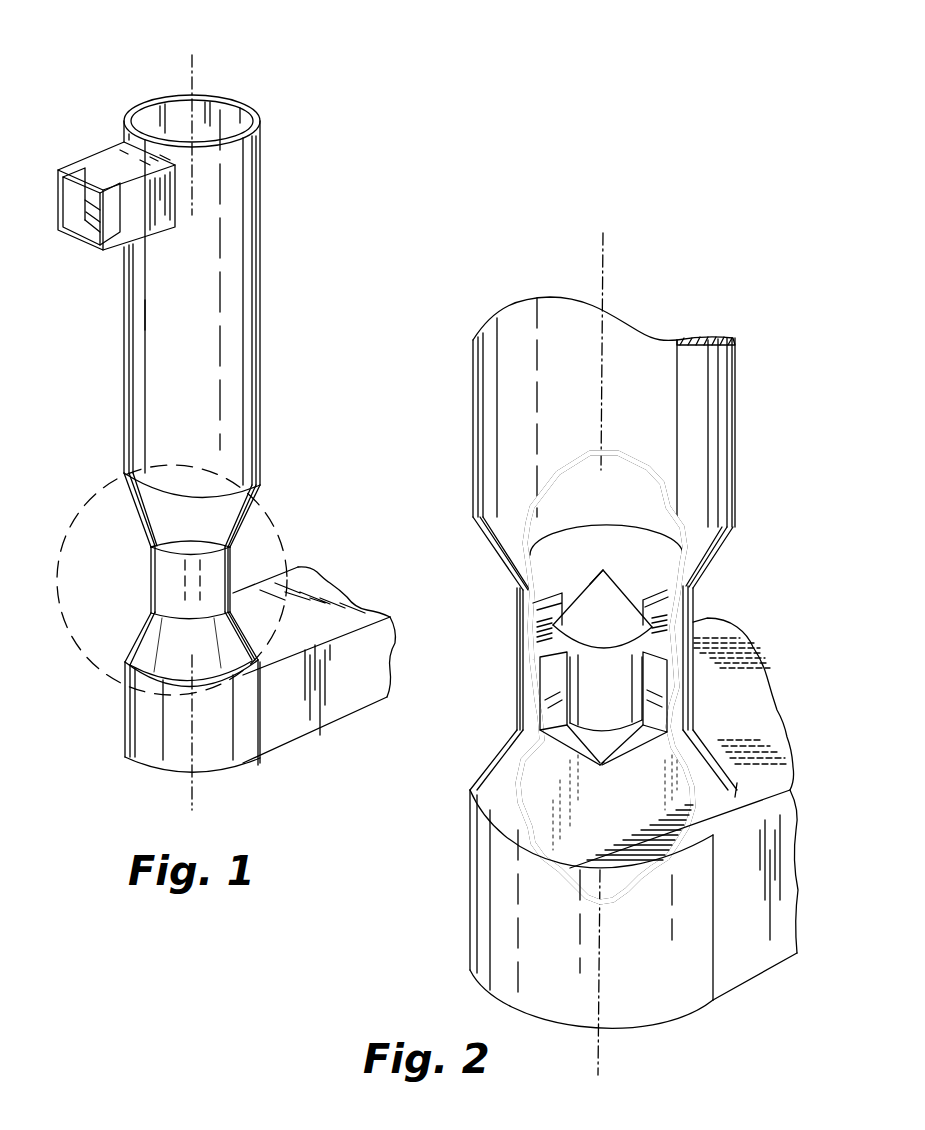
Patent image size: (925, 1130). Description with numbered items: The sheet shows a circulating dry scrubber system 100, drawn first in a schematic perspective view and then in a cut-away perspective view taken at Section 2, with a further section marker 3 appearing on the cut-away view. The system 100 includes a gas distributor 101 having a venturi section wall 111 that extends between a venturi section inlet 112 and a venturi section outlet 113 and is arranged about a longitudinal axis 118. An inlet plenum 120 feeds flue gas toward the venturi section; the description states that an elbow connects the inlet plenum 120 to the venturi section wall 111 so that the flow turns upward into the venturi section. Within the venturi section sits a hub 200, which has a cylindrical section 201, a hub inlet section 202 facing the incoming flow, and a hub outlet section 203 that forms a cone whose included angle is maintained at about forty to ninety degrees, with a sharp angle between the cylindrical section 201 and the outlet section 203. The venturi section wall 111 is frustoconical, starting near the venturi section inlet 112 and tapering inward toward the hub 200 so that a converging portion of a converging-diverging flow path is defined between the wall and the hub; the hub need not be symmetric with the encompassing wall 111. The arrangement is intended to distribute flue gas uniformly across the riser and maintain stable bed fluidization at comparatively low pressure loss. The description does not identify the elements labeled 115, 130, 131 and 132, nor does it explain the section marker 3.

In FIG. 1, the circulating dry scrubber (CDS) system 100 is at (297, 102).
In FIG. 1, the distributor 101 is at (122, 567).
In FIG. 2, the distributor 101 is at (502, 703).
In FIG. 1, the venturi section wall 111 is at (235, 570).
In FIG. 1, the venturi section inlet 112 is at (193, 683).
In FIG. 2, the venturi section inlet 112 is at (492, 838).
In FIG. 1, the venturi section outlet 113 is at (173, 550).
In FIG. 2, the venturi section outlet 113 is at (520, 607).
In FIG. 2, the support fins 115 is at (543, 680).
In FIG. 1, the longitudinal axis 118 is at (192, 87).
In FIG. 2, the longitudinal axis 118 is at (603, 267).
In FIG. 1, the inlet plenum 120 is at (270, 723).
In FIG. 2, the inlet plenum 120 is at (733, 970).
In FIG. 1, the conduit tube 130 is at (122, 340).
In FIG. 2, the conduit tube 130 is at (738, 412).
In FIG. 1, the tapered transition 131 is at (257, 477).
In FIG. 1, the tube wall 132 is at (148, 390).
In FIG. 2, the hub 200 is at (632, 570).
In FIG. 2, the cylindrical section 201 is at (618, 710).
In FIG. 2, the hub inlet section 202 is at (613, 750).
In FIG. 2, the hub outlet section 203 is at (595, 577).
In FIG. 1, the section line 2 is at (273, 520).
In FIG. 2, the section line 3 is at (603, 425).